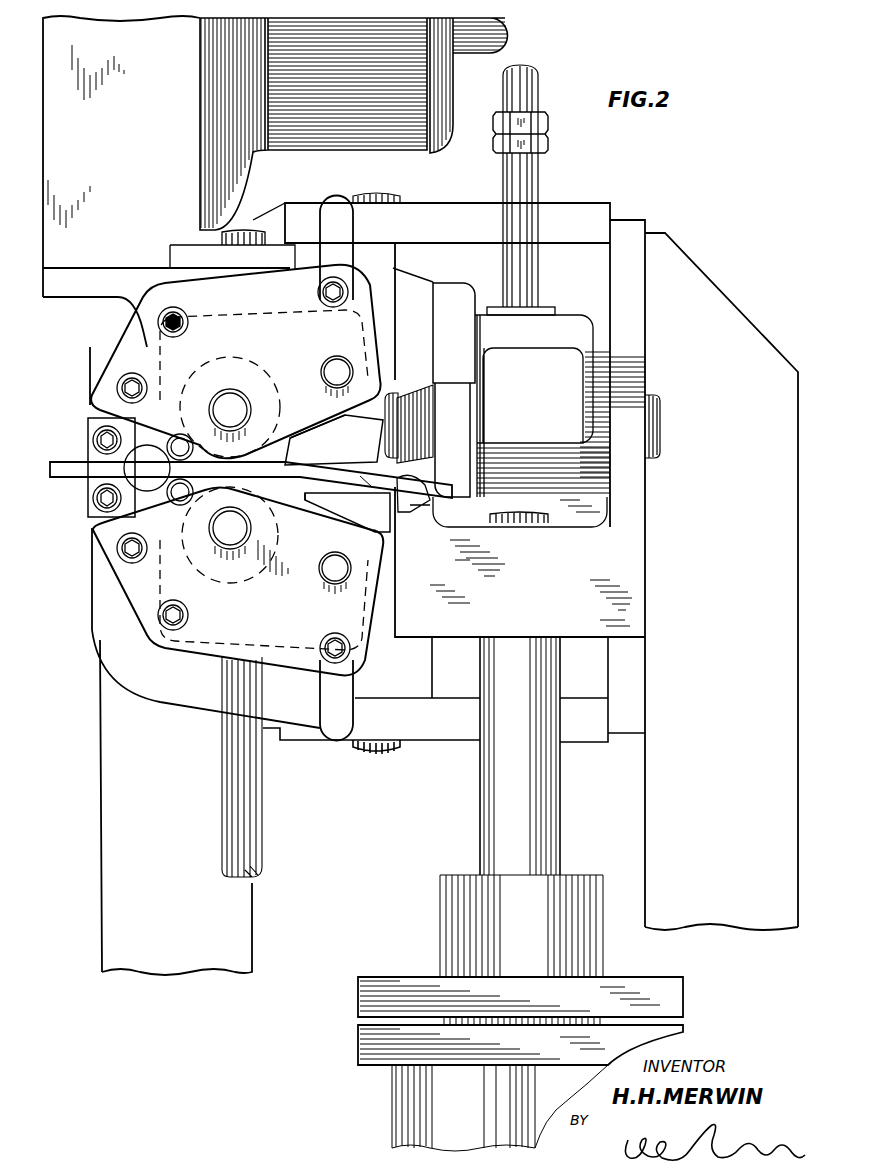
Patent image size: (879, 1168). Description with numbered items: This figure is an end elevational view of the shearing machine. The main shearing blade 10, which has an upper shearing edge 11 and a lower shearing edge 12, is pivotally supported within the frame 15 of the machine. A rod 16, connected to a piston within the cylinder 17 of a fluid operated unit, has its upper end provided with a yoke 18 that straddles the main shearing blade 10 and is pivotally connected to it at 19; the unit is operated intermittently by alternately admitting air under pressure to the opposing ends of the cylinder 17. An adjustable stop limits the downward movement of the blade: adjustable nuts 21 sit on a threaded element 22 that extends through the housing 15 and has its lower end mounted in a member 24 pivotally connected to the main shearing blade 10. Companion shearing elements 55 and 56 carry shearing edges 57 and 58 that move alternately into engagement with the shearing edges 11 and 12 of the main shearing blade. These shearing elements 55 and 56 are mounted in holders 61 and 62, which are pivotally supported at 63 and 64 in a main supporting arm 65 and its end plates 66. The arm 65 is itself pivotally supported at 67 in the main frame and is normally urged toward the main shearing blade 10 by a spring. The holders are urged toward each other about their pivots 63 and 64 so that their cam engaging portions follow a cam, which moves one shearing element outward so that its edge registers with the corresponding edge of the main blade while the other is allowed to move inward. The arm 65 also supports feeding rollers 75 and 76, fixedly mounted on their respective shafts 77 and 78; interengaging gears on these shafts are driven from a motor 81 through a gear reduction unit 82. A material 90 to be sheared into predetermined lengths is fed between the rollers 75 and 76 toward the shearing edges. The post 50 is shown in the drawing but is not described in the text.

The main shearing blade 10 is at (445, 294).
The upper shearing edge 11 is at (393, 265).
The lower shearing edge 12 is at (415, 395).
The frame 15 is at (592, 214).
The rod 16 is at (485, 793).
The cylinder 17 is at (393, 1108).
The yoke 18 is at (630, 608).
The pivotal connection 19 is at (660, 432).
The adjustable nuts 21 is at (548, 136).
The threaded element 22 is at (541, 92).
The member 24 is at (546, 305).
The post 50 is at (255, 812).
The companion shearing element 55 is at (355, 428).
The companion shearing element 56 is at (357, 529).
The shearing edge 57 is at (369, 487).
The shearing edge 58 is at (411, 512).
The holder 61 is at (312, 431).
The holder 62 is at (318, 510).
The pivot 63 is at (337, 362).
The pivot 64 is at (333, 576).
The main supporting arm 65 is at (105, 640).
The end plates 66 is at (143, 347).
The pivot 67 is at (390, 198).
The feeding roller 75 is at (278, 395).
The feeding roller 76 is at (210, 572).
The shaft 77 is at (232, 403).
The shaft 78 is at (230, 541).
The motor 81 is at (440, 86).
The gear reduction unit 82 is at (72, 258).
The material 90 is at (65, 470).